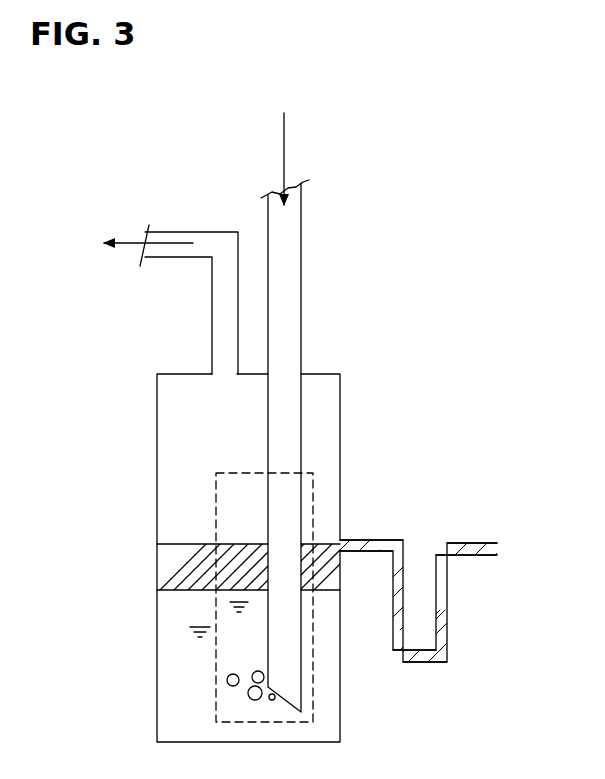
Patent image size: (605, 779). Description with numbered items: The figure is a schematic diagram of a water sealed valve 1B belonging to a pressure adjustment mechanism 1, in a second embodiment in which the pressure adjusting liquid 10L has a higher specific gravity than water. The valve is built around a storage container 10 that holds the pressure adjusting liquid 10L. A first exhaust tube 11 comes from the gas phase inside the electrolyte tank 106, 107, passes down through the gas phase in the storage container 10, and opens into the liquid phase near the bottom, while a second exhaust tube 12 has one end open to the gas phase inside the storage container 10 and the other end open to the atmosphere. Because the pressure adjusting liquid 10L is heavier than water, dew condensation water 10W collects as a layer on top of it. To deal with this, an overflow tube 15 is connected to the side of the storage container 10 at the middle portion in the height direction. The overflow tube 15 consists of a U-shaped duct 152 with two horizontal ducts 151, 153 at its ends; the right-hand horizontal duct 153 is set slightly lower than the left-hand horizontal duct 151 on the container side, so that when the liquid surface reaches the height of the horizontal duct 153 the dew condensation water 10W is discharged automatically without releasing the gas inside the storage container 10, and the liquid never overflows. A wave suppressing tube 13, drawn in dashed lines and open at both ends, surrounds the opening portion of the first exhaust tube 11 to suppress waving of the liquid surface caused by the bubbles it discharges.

The water sealed valve 1B is at (112, 382).
The pressure adjustment mechanism 1 is at (68, 347).
The storage container 10 is at (157, 463).
The dew condensation water 10W is at (163, 570).
The pressure adjusting liquid 10L is at (160, 672).
The first exhaust tube 11 is at (301, 440).
The second exhaust tube 12 is at (200, 228).
The wave suppressing tube 13 is at (317, 500).
The overflow tube 15 is at (438, 616).
The horizontal duct 151 is at (382, 538).
The U-shaped duct 152 is at (427, 660).
The horizontal duct 153 is at (472, 557).
The electrolyte tank 106 is at (281, 147).
The electrolyte tank 107 is at (281, 147).